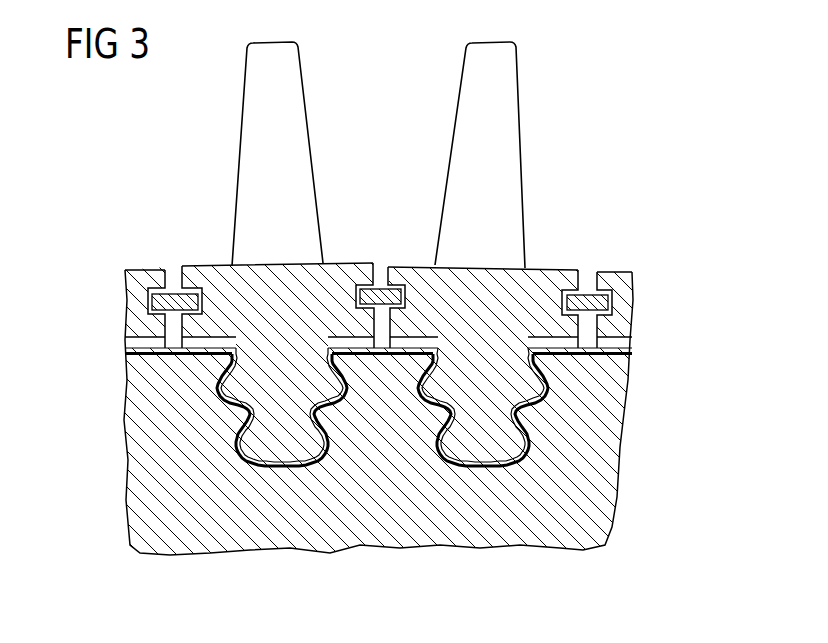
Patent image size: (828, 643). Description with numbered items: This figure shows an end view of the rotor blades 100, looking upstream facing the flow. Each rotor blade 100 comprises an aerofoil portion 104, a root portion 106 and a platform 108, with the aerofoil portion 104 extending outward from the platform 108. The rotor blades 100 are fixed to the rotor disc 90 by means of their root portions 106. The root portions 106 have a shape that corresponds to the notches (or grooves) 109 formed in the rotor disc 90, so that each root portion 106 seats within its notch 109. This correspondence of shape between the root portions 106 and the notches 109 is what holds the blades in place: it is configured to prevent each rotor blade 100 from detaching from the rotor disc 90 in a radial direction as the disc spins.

The rotor blade 100 is at (620, 103).
The aerofoil portion 104 is at (449, 183).
The platform 108 is at (214, 282).
The root portion 106 is at (237, 381).
The notches (or grooves) 109 is at (237, 443).
The rotor disc 90 is at (608, 446).